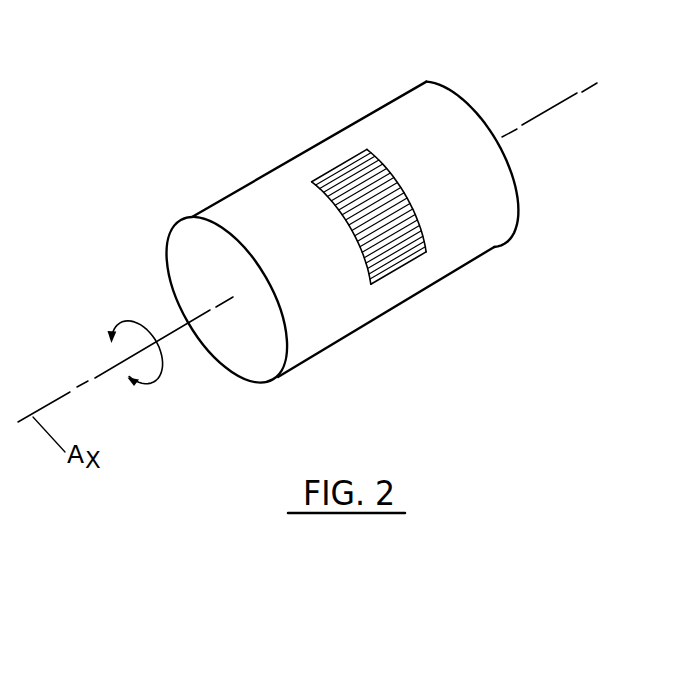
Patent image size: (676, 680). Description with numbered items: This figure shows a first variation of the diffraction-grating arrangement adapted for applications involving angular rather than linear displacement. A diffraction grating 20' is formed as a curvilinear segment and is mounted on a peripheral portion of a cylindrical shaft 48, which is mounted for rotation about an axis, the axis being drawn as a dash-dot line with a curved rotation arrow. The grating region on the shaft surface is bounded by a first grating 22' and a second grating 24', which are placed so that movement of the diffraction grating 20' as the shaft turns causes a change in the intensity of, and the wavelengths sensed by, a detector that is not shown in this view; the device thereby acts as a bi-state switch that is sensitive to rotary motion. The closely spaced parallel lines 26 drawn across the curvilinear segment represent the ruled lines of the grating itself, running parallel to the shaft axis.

The cylindrical shaft 48 is at (430, 81).
The diffraction grating 20' is at (311, 216).
The first grating 22' is at (401, 178).
The scan lines 26 is at (407, 197).
The second grating 24' is at (469, 266).